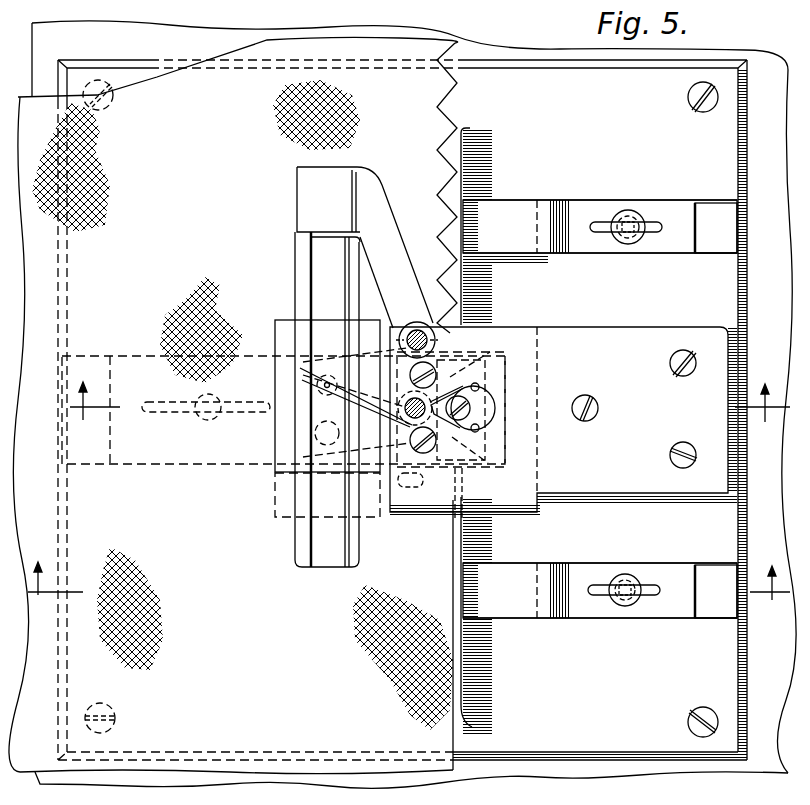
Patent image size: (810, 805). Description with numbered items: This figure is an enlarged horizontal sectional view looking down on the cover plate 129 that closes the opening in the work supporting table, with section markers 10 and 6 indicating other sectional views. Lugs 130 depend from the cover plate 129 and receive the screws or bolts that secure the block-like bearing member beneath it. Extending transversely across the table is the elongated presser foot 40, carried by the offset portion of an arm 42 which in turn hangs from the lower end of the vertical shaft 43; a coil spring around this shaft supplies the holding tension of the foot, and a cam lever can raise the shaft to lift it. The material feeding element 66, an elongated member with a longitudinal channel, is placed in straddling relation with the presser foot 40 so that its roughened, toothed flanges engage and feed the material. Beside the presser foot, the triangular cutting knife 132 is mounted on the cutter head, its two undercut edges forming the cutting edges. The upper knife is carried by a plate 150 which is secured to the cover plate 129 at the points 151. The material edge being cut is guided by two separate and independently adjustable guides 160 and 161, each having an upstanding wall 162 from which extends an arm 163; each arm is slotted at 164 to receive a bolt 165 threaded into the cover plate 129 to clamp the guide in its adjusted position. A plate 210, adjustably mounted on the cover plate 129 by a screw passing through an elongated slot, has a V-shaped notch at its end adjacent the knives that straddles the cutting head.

The cover plate 129 is at (402, 410).
The lugs 130 is at (88, 107).
The upstanding wall 162 is at (461, 158).
The guide 160 is at (662, 242).
The guide 161 is at (661, 613).
The arm 163 is at (575, 204).
The slot 164 is at (600, 225).
The bolt 165 is at (631, 216).
The plate 150 is at (599, 331).
The securing point 151 is at (670, 367).
The presser foot 40 is at (297, 258).
The arm 42 is at (398, 251).
The vertical shaft 43 is at (434, 343).
The cutting knife 132 is at (478, 404).
The material feeding element 66 is at (290, 433).
The plate 210 is at (155, 454).
The section line 10 is at (428, 417).
The section line 6 is at (409, 596).